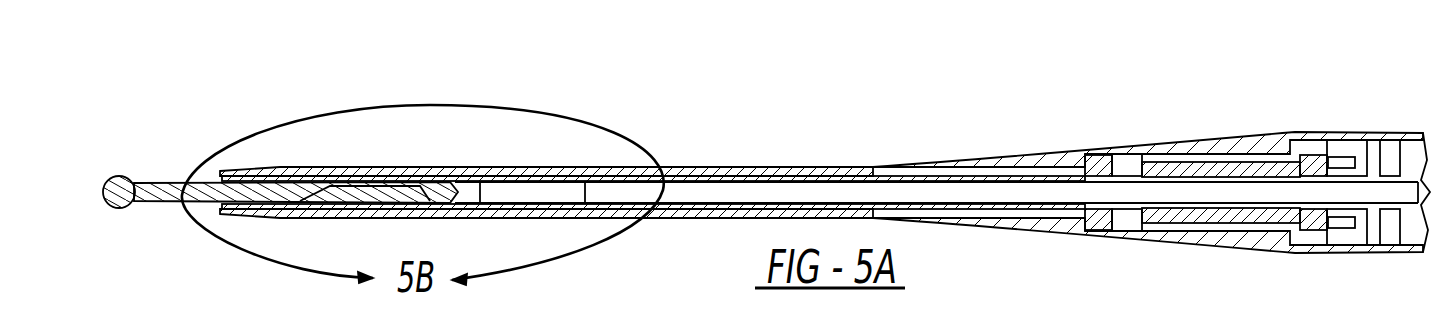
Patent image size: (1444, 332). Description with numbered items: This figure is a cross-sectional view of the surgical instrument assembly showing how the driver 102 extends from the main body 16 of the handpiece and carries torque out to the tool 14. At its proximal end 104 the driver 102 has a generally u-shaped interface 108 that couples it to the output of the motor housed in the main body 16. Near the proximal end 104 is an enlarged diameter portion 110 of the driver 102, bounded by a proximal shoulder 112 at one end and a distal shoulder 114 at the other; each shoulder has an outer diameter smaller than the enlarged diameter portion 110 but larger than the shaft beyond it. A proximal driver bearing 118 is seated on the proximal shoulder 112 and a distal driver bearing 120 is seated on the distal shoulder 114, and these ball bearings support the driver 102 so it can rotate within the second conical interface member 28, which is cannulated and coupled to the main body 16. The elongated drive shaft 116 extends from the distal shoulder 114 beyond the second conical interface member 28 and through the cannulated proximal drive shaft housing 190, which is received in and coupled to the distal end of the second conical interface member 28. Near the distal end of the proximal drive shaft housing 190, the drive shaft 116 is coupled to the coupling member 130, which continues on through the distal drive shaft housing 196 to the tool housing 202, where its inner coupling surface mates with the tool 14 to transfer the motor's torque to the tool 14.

The tool 14 is at (147, 184).
The coupling member 130 is at (450, 181).
The elongated drive shaft 116 is at (777, 186).
The proximal drive shaft housing 190 is at (805, 168).
The second conical interface member 28 is at (1245, 132).
The distal driver bearing 120 is at (1100, 160).
The enlarged diameter portion 110 is at (1213, 208).
The distal shoulder 114 is at (1097, 200).
The proximal driver bearing 118 is at (1318, 162).
The proximal shoulder 112 is at (1315, 225).
The driver 102 is at (1382, 155).
The proximal end 104 is at (1412, 168).
The interface 108 is at (1416, 240).
The main body 16 is at (1427, 170).
The tool housing 202 is at (567, 331).
The distal drive shaft housing 196 is at (687, 322).